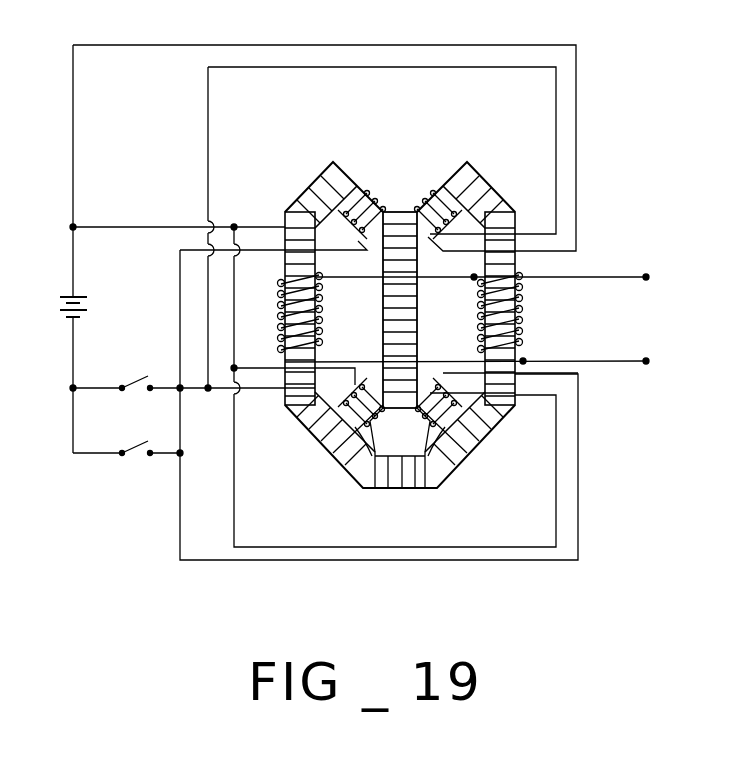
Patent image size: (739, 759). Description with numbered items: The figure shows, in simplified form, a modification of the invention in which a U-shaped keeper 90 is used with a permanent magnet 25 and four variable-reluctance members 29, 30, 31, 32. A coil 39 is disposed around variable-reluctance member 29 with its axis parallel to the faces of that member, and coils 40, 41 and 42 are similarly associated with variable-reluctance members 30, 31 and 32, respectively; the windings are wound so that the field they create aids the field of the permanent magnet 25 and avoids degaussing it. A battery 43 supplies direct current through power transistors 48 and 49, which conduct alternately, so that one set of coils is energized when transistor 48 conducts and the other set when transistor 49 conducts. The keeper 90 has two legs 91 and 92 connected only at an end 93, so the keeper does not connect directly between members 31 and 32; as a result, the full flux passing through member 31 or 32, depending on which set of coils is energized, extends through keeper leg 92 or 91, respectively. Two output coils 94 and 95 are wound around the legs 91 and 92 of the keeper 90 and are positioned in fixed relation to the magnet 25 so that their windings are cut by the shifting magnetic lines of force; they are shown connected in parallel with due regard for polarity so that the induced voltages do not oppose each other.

The permanent magnet 25 is at (418, 345).
The variable-reluctance member 29 is at (383, 362).
The variable-reluctance member 30 is at (480, 434).
The variable-reluctance member 31 is at (447, 178).
The variable-reluctance member 32 is at (350, 172).
The coil 39 is at (378, 489).
The coil 40 is at (448, 478).
The coil 41 is at (433, 190).
The coil 42 is at (368, 190).
The battery 43 is at (84, 297).
The power transistor 48 is at (140, 375).
The power transistor 49 is at (142, 442).
The keeper 90 is at (307, 436).
The leg 91 is at (523, 364).
The leg 92 is at (285, 276).
The end 93 is at (418, 490).
The output coil 94 is at (520, 340).
The output coil 95 is at (285, 347).